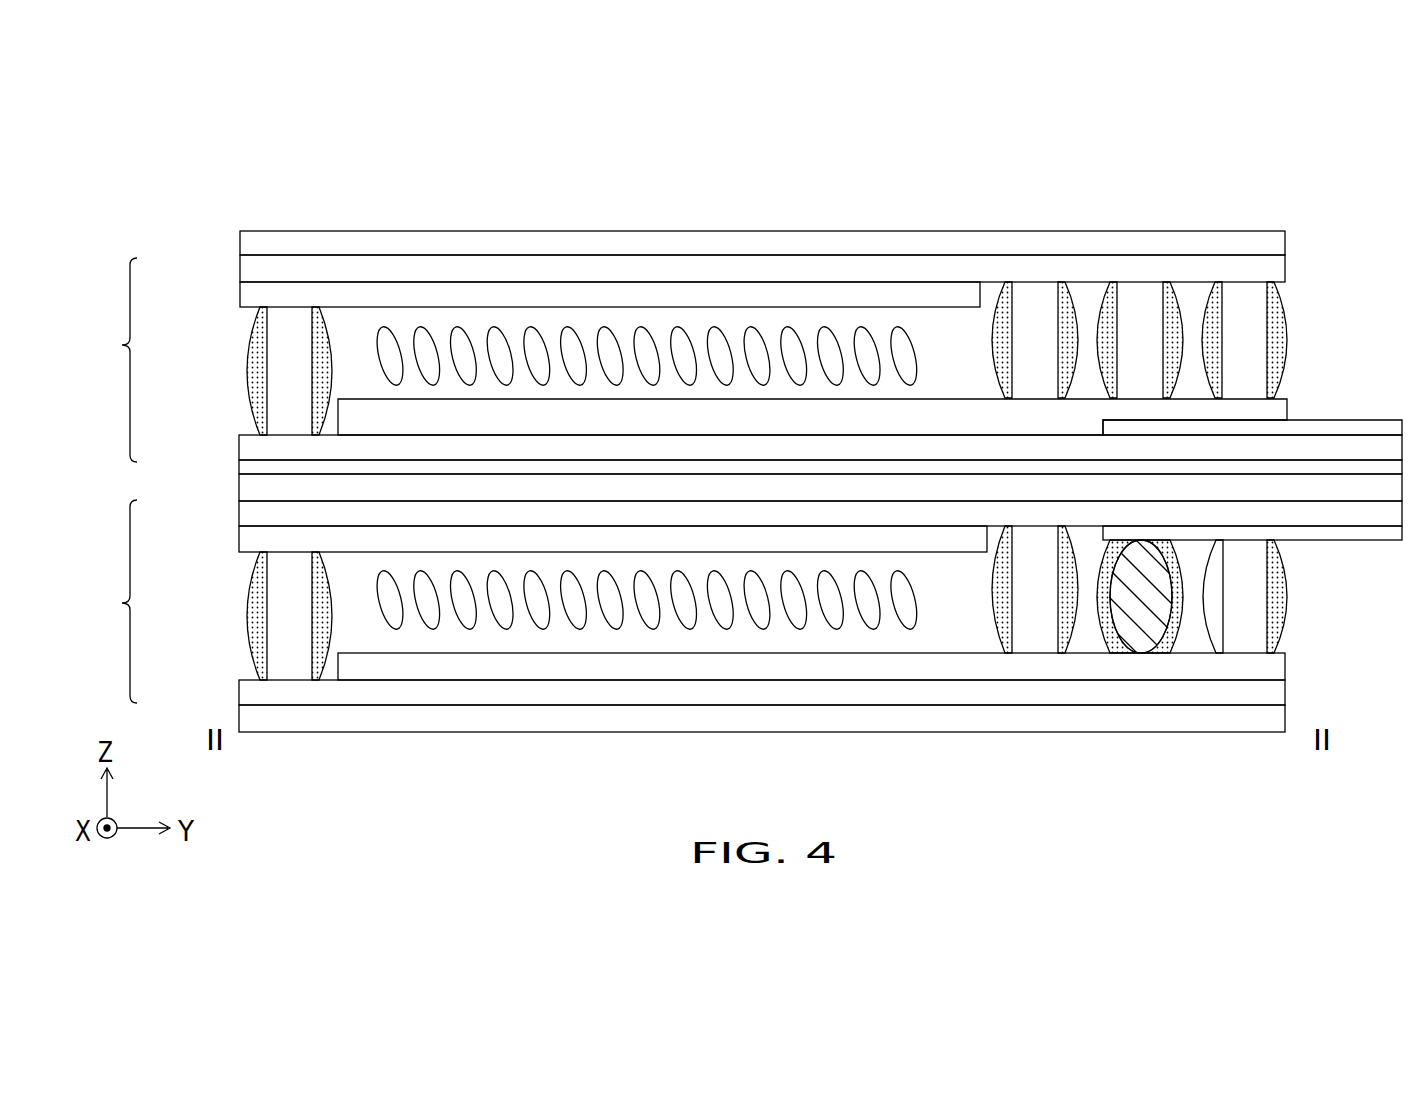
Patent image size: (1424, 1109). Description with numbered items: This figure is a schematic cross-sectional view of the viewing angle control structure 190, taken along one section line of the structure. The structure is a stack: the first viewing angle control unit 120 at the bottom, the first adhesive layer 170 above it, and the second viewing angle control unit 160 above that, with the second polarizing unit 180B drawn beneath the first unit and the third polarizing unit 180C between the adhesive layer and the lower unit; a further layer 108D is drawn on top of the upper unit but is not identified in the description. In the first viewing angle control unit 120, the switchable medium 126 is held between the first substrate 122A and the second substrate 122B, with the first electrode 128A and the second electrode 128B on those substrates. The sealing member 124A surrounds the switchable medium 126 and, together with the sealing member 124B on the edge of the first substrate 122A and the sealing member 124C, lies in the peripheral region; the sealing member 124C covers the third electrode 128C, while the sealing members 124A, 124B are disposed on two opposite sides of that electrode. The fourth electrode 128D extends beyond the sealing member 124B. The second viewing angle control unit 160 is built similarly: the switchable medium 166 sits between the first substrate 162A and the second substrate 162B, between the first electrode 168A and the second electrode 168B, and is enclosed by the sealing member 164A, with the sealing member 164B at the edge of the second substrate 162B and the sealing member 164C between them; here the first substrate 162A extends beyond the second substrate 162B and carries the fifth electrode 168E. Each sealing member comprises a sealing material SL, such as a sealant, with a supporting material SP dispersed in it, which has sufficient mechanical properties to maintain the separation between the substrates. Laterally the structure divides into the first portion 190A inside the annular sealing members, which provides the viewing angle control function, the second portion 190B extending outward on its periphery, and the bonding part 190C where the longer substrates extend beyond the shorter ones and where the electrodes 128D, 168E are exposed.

The cover layer 108D is at (250, 243).
The second substrate 162B is at (250, 270).
The second electrode 168B is at (250, 293).
The first electrode 168A is at (360, 418).
The fifth electrode 168E is at (1332, 427).
The switchable medium 166 is at (390, 355).
The first substrate 162A is at (250, 445).
The second viewing angle control unit 160 is at (108, 360).
The first adhesive layer 170 is at (245, 468).
The third polarizing unit 180C is at (247, 488).
The second substrate 122B is at (247, 515).
The second electrode 128B is at (247, 540).
The fourth electrode 128D is at (1332, 533).
The switchable medium 126 is at (390, 600).
The first electrode 128A is at (247, 690).
The first substrate 122A is at (711, 686).
The second polarizing unit 180B is at (252, 717).
The first viewing angle control unit 120 is at (108, 601).
The sealing member 164A is at (403, 177).
The sealing member 164B is at (1288, 177).
The sealing member 164C is at (1178, 177).
The sealing member 124A is at (360, 802).
The sealing member 124B is at (1293, 784).
The sealing member 124C is at (1127, 678).
The third electrode 128C is at (1152, 618).
The first portion 190A is at (240, 127).
The second portion 190B is at (1402, 127).
The bonding part 190C is at (1402, 232).
The viewing angle control structure 190 is at (1417, 852).
The supporting material SP is at (288, 320).
The sealing material SL is at (320, 330).